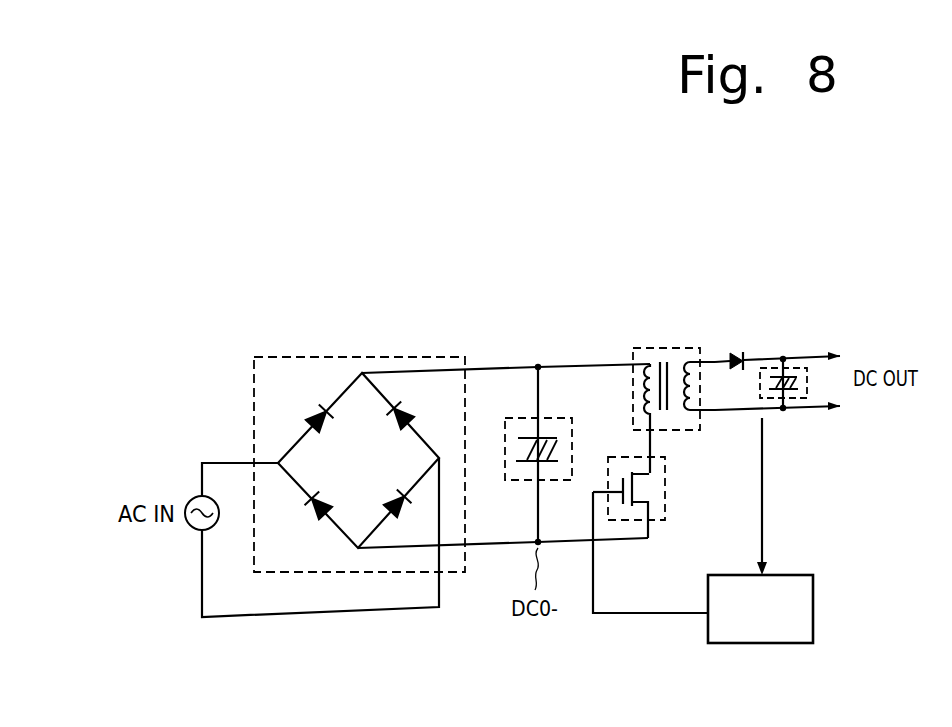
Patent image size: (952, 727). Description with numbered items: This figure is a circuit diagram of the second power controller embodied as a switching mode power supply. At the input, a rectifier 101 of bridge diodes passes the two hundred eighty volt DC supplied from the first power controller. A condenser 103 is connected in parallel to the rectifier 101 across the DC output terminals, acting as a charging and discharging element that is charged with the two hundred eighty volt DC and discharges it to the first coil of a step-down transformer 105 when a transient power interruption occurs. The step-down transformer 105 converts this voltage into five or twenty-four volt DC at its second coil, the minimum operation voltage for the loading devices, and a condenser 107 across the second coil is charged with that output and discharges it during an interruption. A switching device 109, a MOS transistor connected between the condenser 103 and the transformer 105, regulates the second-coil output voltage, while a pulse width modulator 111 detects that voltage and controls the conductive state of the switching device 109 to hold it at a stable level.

The rectifier 101 is at (420, 357).
The condenser 103 is at (555, 418).
The step-down transformer 105 is at (664, 346).
The condenser 107 is at (793, 362).
The switching device 109 is at (666, 497).
The pulse width modulator 111 is at (785, 572).